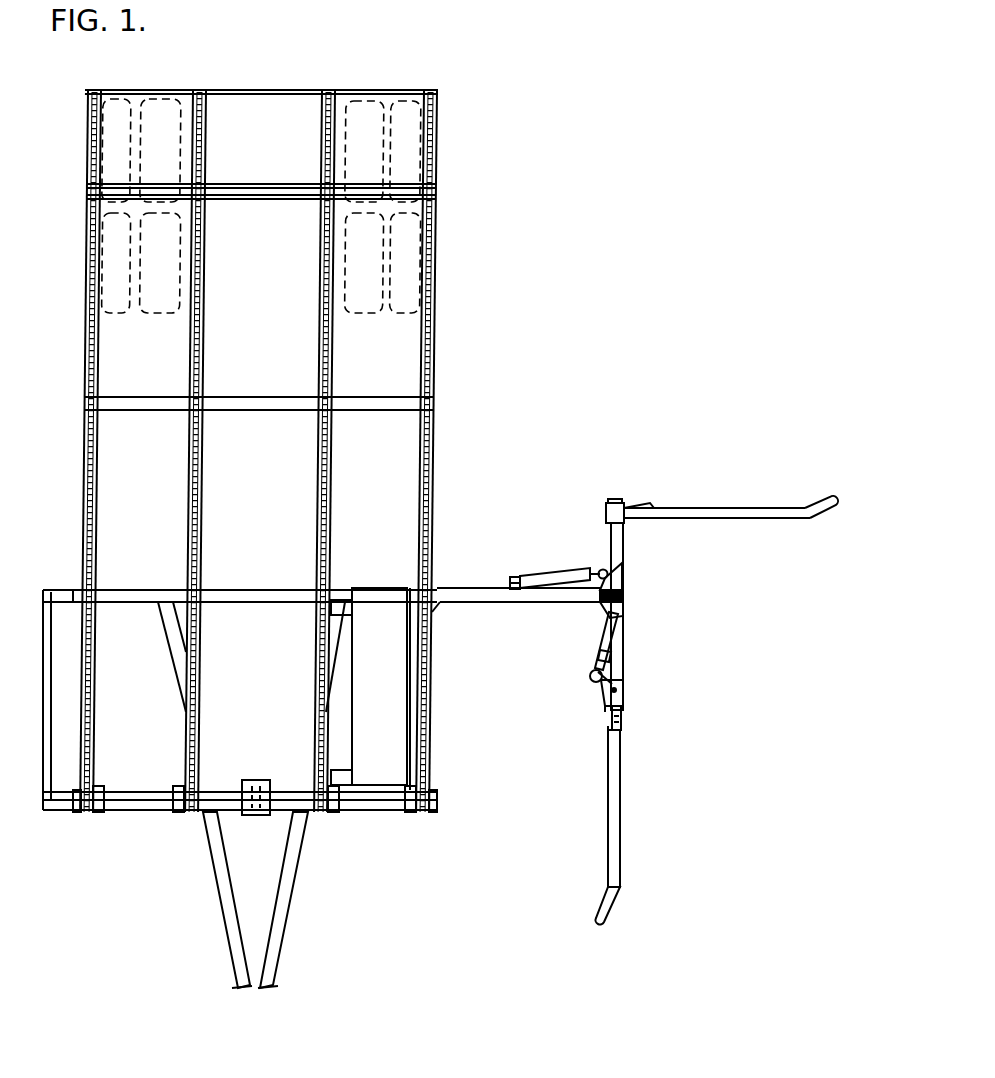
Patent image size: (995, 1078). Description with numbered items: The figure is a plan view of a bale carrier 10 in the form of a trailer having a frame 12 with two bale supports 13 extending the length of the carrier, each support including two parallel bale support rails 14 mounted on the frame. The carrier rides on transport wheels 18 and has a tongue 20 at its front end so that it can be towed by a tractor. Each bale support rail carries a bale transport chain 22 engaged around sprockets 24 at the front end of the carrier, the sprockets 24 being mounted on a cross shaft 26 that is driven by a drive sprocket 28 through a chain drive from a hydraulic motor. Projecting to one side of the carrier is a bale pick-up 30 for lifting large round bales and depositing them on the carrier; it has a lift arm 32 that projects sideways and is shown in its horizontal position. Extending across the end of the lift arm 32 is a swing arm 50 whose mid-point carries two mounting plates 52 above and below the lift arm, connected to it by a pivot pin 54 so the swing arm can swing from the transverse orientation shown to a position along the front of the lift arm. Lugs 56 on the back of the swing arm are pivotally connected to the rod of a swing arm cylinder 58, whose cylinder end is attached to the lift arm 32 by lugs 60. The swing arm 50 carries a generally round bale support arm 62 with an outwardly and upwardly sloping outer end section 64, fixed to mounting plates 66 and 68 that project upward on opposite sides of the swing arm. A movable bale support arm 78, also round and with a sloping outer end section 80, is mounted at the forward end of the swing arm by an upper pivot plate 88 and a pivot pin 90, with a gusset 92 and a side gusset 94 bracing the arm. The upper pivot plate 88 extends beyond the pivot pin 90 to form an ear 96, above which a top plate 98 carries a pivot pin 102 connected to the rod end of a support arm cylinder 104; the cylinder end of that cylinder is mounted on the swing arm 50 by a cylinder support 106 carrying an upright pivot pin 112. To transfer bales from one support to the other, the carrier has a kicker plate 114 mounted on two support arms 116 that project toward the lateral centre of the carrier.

The bale carrier 10 is at (456, 344).
The frame 12 is at (438, 483).
The bale supports 13 is at (152, 397).
The bale support rails 14 is at (198, 118).
The transport wheels 18 is at (86, 263).
The tongue 20 is at (293, 908).
The bale transport chain 22 is at (142, 193).
The sprockets 24 is at (176, 814).
The cross shaft 26 is at (141, 790).
The drive sprocket 28 is at (253, 818).
The bale pick-up 30 is at (529, 854).
The lift arm 32 is at (488, 596).
The swing arm 50 is at (628, 541).
The mounting plates 52 is at (624, 596).
The pivot pin 54 is at (605, 607).
The lugs 56 is at (600, 570).
The swing arm cylinder 58 is at (531, 572).
The lugs 60 is at (512, 580).
The bale support arm 62 is at (730, 507).
The outer end section 64 is at (815, 500).
The mounting plate 66 is at (630, 505).
The mounting plate 68 is at (607, 500).
The movable bale support arm 78 is at (621, 823).
The outer end section 80 is at (613, 895).
The upper pivot plate 88 is at (622, 714).
The pivot pin 90 is at (624, 694).
The gusset 92 is at (621, 742).
The side gusset 94 is at (608, 727).
The ear 96 is at (606, 706).
The top plate 98 is at (592, 672).
The pivot pin 102 is at (590, 682).
The support arm cylinder 104 is at (626, 682).
The cylinder support 106 is at (626, 609).
The upright pivot pin 112 is at (612, 655).
The kicker plate 114 is at (398, 740).
The support arms 116 is at (343, 768).